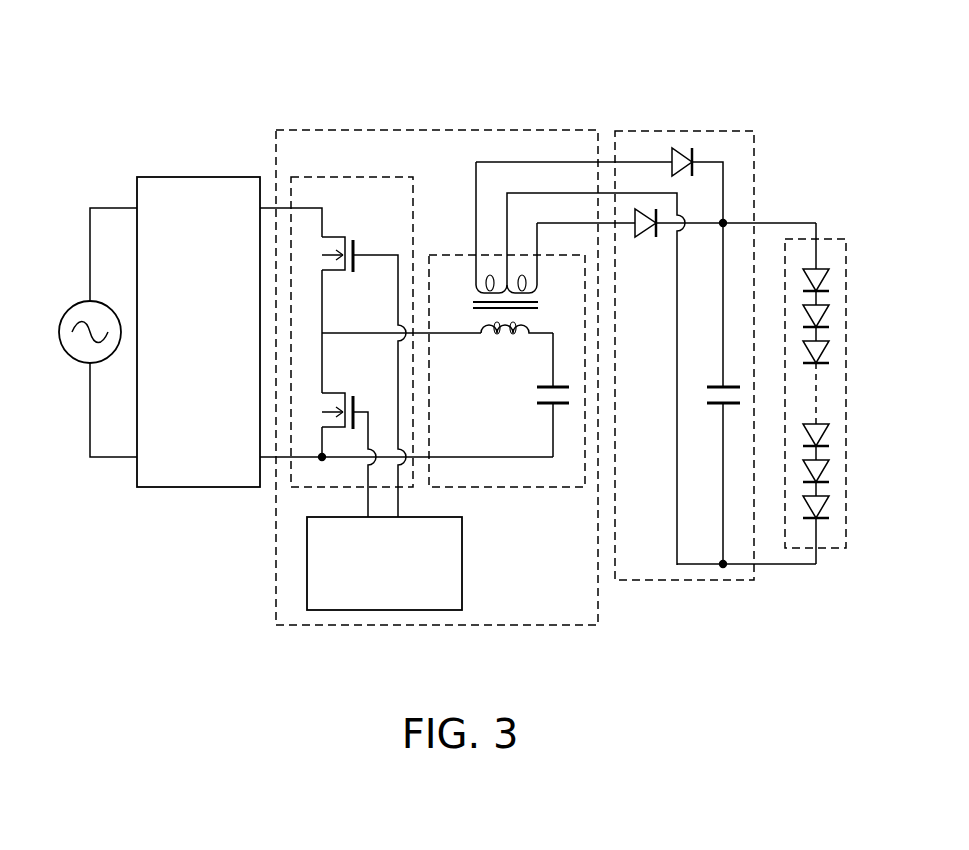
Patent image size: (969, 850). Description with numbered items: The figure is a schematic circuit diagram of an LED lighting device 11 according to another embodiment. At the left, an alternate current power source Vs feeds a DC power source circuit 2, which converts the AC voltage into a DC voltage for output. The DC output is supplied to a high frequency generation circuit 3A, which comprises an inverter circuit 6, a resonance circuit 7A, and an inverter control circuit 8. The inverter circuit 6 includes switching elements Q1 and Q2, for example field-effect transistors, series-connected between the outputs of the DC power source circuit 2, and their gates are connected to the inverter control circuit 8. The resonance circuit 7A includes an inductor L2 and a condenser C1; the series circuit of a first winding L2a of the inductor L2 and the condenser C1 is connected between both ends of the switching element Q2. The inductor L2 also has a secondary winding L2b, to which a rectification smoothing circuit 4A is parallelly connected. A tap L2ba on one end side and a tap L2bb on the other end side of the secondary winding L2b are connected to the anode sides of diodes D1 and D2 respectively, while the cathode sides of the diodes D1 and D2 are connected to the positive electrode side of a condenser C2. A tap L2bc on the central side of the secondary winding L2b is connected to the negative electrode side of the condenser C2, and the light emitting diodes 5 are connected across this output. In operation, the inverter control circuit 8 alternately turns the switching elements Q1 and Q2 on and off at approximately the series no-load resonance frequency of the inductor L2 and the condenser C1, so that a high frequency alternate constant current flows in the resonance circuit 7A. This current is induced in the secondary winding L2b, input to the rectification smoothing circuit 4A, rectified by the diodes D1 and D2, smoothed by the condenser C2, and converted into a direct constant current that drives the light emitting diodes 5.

The LED lighting device 11 is at (561, 76).
The alternate current power source Vs is at (75, 308).
The DC power source circuit 2 is at (201, 177).
The high frequency generation circuit 3A is at (285, 130).
The inverter circuit 6 is at (392, 177).
The switching element Q1 is at (335, 237).
The switching element Q2 is at (338, 427).
The inverter control circuit 8 is at (384, 610).
The resonance circuit 7A is at (512, 487).
The inductor L2 is at (540, 303).
The first winding L2a is at (494, 330).
The secondary winding L2b is at (470, 292).
The tap L2ba is at (478, 283).
The tap L2bb is at (540, 285).
The tap L2bc is at (503, 285).
The condenser C1 is at (560, 406).
The rectification smoothing circuit 4A is at (655, 131).
The diode D1 is at (692, 150).
The diode D2 is at (647, 236).
The condenser C2 is at (718, 406).
The light emitting diodes 5 is at (790, 239).